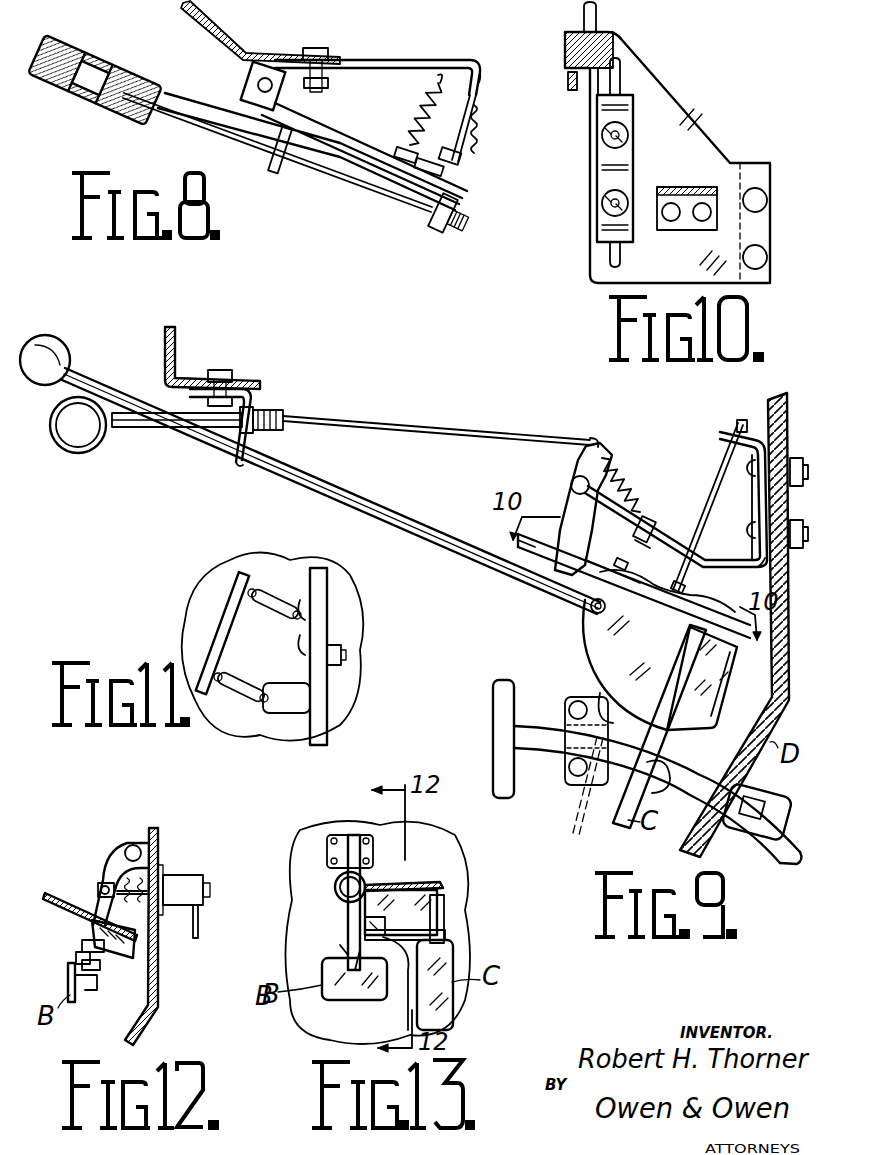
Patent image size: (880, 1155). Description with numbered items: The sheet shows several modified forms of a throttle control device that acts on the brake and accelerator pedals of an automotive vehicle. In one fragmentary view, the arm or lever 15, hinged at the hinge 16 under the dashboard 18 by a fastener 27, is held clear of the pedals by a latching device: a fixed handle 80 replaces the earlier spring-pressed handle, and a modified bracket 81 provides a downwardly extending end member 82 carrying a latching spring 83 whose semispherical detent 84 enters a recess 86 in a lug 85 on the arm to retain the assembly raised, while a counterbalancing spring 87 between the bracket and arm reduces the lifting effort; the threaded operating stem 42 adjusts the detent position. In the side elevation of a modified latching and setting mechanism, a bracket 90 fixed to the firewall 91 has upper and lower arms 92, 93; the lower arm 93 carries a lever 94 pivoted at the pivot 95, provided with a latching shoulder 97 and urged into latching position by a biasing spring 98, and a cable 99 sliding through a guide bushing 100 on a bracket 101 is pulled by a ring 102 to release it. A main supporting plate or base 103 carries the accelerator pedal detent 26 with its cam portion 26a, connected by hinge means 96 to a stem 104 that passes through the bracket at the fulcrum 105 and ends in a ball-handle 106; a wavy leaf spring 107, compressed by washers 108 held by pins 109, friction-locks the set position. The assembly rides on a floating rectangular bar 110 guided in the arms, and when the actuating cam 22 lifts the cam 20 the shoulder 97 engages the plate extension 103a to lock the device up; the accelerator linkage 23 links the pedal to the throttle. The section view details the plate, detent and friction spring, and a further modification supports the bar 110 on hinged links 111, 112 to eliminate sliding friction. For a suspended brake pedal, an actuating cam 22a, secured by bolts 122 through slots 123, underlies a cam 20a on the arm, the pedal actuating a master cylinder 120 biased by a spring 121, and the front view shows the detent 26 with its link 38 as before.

In FIG. 8, the arm or lever 15 is at (334, 140).
In FIG. 12, the arm or lever 15 is at (93, 900).
In FIG. 13, the arm or lever 15 is at (445, 884).
In FIG. 8, the hinge 16 is at (254, 84).
In FIG. 8, the dashboard 18 is at (214, 30).
In FIG. 9, the dashboard 18 is at (180, 345).
In FIG. 9, the cam 20 is at (730, 698).
In FIG. 12, the cam 20a is at (133, 952).
In FIG. 13, the cam 20a is at (365, 925).
In FIG. 9, the actuating cam 22 is at (565, 765).
In FIG. 12, the actuating cam 22a is at (97, 965).
In FIG. 13, the actuating cam 22a is at (408, 998).
In FIG. 9, the linkage 23 is at (785, 860).
In FIG. 9, the accelerator pedal detent 26 is at (602, 640).
In FIG. 13, the accelerator pedal detent 26 is at (447, 938).
In FIG. 9, the cam portion 26a is at (600, 665).
In FIG. 8, the bolt 27 is at (318, 48).
In FIG. 9, the bolt 27 is at (228, 370).
In FIG. 13, the operating stem-receiving link 38 is at (448, 910).
In FIG. 8, the threaded operating stem 42 is at (372, 190).
In FIG. 8, the fixed handle 80 is at (118, 52).
In FIG. 8, the modified bracket 81 is at (385, 60).
In FIG. 8, the downwardly extending end member 82 is at (482, 78).
In FIG. 8, the latching spring 83 is at (470, 137).
In FIG. 8, the semispherical detent 84 is at (470, 158).
In FIG. 8, the lug 85 is at (455, 180).
In FIG. 8, the recess 86 is at (455, 165).
In FIG. 8, the counterbalancing spring 87 is at (424, 100).
In FIG. 9, the bracket 90 is at (763, 505).
In FIG. 9, the firewall 91 is at (768, 402).
In FIG. 9, the upper arm 92 is at (720, 434).
In FIG. 9, the lower arm 93 is at (710, 550).
In FIG. 10, the lever 94 is at (572, 92).
In FIG. 9, the lever 94 is at (575, 532).
In FIG. 9, the pivot 95 is at (568, 475).
In FIG. 9, the hinge means 96 is at (590, 614).
In FIG. 10, the latching shoulder 97 is at (568, 78).
In FIG. 9, the latching shoulder 97 is at (595, 520).
In FIG. 9, the biasing spring 98 is at (625, 475).
In FIG. 9, the cable 99 is at (490, 425).
In FIG. 9, the guide bushing 100 is at (155, 425).
In FIG. 9, the bracket 101 is at (262, 395).
In FIG. 9, the ring 102 is at (85, 452).
In FIG. 10, the main supporting plate or base 103 is at (680, 88).
In FIG. 9, the main supporting plate or base 103 is at (727, 600).
In FIG. 10, the plate extension 103a is at (575, 38).
In FIG. 9, the plate extension 103a is at (518, 542).
In FIG. 10, the stem 104 is at (600, 16).
In FIG. 9, the stem 104 is at (390, 512).
In FIG. 9, the fulcrum 105 is at (260, 445).
In FIG. 9, the ball-handle 106 is at (60, 345).
In FIG. 10, the wavy leaf spring 107 is at (596, 226).
In FIG. 9, the wavy leaf spring 107 is at (618, 560).
In FIG. 10, the washers 108 is at (625, 128).
In FIG. 9, the washers 108 is at (695, 604).
In FIG. 10, the pins 109 is at (600, 198).
In FIG. 9, the pins 109 is at (625, 568).
In FIG. 10, the floating rectangular bar 110 is at (700, 185).
In FIG. 9, the floating rectangular bar 110 is at (720, 467).
In FIG. 11, the floating rectangular bar 110 is at (210, 632).
In FIG. 11, the hinged link 111 is at (240, 705).
In FIG. 11, the hinged link 112 is at (285, 595).
In FIG. 12, the master cylinder 120 is at (182, 882).
In FIG. 12, the spring 121 is at (160, 858).
In FIG. 13, the spring 121 is at (336, 886).
In FIG. 12, the bolts 122 is at (92, 935).
In FIG. 13, the bolts 122 is at (340, 960).
In FIG. 12, the slots 123 is at (80, 957).